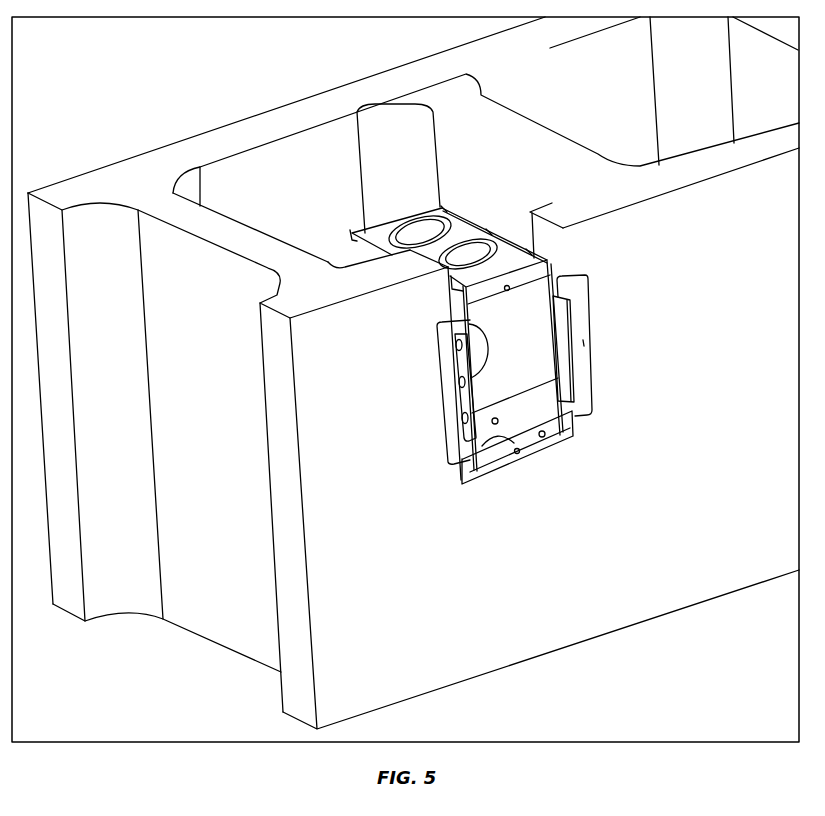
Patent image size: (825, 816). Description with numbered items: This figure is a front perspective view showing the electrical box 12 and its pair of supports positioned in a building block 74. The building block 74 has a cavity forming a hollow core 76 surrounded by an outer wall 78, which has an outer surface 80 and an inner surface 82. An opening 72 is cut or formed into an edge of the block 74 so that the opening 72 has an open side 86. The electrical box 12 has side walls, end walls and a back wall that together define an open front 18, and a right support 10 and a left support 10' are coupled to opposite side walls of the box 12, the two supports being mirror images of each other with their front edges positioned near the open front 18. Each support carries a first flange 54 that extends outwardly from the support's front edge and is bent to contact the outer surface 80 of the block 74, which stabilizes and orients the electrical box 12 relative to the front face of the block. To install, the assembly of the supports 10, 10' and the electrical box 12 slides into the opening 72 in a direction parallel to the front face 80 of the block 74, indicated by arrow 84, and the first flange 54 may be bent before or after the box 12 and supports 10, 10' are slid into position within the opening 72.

The building block 74 is at (127, 135).
The hollow core 76 is at (264, 160).
The outer wall 78 is at (327, 278).
The outer surface 80 is at (347, 363).
The inner surface 82 is at (506, 188).
The open side 86 is at (552, 222).
The opening 72 is at (553, 238).
The electrical box 12 is at (401, 200).
The support 10 is at (601, 343).
The second support 10' is at (433, 381).
The first flange 54 is at (445, 391).
The open front 18 is at (556, 372).
The arrow 84 is at (526, 508).